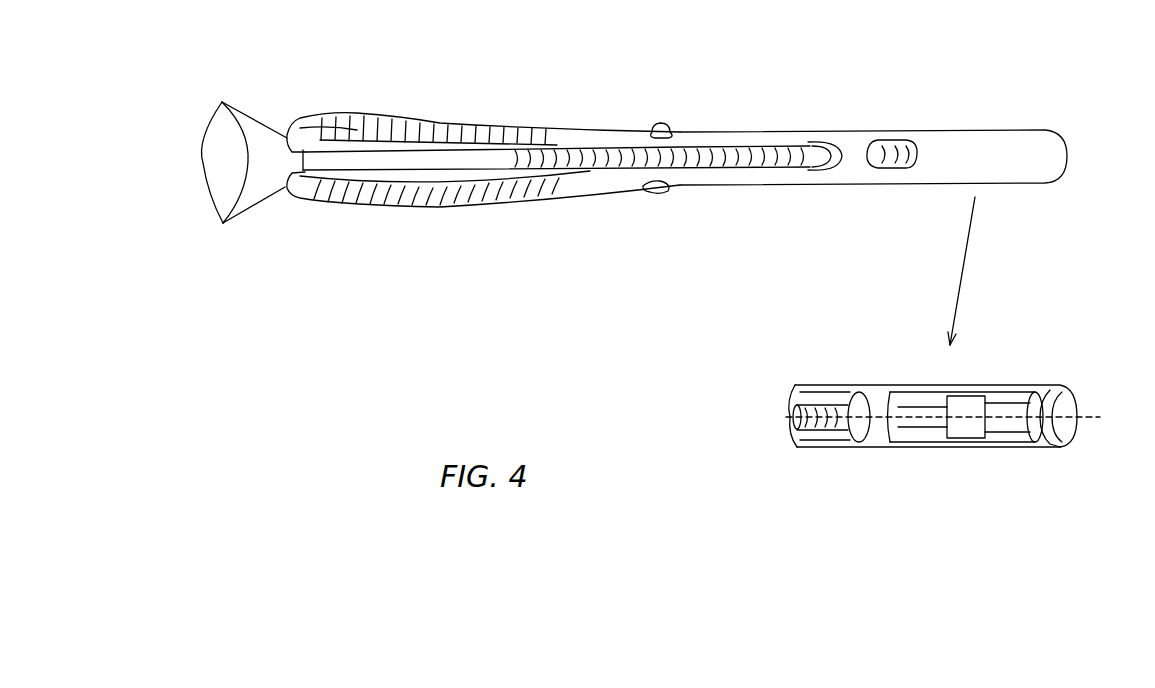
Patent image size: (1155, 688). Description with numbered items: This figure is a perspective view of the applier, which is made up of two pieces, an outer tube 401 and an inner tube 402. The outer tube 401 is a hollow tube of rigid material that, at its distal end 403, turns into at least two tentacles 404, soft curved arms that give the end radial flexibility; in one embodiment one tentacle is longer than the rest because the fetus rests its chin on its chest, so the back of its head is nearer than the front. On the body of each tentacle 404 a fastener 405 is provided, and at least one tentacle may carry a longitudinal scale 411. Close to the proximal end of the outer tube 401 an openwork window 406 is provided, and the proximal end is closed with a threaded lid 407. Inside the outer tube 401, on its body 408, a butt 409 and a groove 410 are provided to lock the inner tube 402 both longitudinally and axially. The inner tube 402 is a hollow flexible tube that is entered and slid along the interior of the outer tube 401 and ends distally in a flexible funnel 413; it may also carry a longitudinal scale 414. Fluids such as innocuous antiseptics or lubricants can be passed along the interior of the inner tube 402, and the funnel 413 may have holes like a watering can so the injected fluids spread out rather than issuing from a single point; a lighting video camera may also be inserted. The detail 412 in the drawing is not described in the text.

The outer tube 401 is at (1012, 138).
The inner tube 402 is at (390, 163).
The distal end 403 is at (360, 108).
The tentacles 404 is at (444, 122).
The fastener 405 is at (663, 125).
The openwork window 406 is at (890, 142).
The threaded lid 407 is at (1070, 403).
The body 408 is at (472, 160).
The butt 409 is at (877, 433).
The groove 410 is at (992, 397).
The longitudinal scale 411 is at (522, 45).
The neck 412 is at (320, 158).
The flexible funnel 413 is at (220, 160).
The longitudinal scale 414 is at (612, 157).